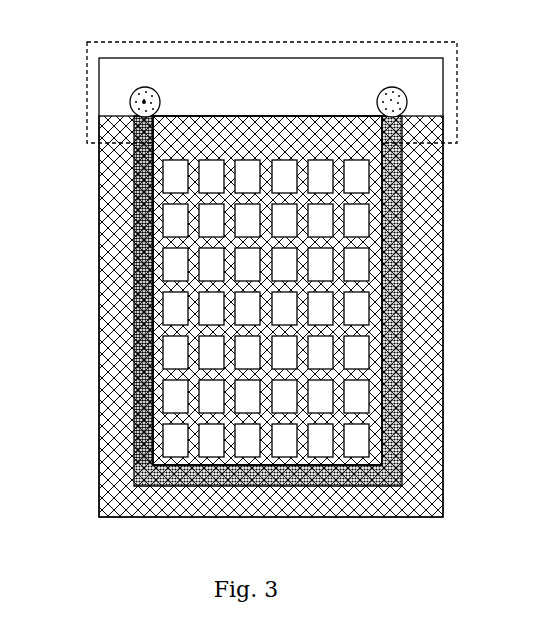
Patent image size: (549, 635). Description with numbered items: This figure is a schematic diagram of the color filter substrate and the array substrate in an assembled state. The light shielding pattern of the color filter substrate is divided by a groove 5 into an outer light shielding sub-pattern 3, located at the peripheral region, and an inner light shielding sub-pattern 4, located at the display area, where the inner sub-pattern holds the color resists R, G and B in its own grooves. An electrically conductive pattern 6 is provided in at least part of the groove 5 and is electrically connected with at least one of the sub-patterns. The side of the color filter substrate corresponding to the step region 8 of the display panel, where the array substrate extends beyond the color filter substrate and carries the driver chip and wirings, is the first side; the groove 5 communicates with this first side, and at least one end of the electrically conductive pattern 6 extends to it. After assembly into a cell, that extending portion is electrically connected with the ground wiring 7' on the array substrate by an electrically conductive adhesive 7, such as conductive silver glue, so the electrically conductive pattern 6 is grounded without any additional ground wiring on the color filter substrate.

The outer light shielding sub-pattern 3 is at (100, 314).
The inner light shielding sub-pattern 4 is at (137, 369).
The groove 5 is at (122, 239).
The electrically conductive pattern 6 is at (130, 207).
The electrically conductive adhesive 7 is at (224, 99).
The ground wiring 7' is at (100, 72).
The step region 8 is at (458, 73).